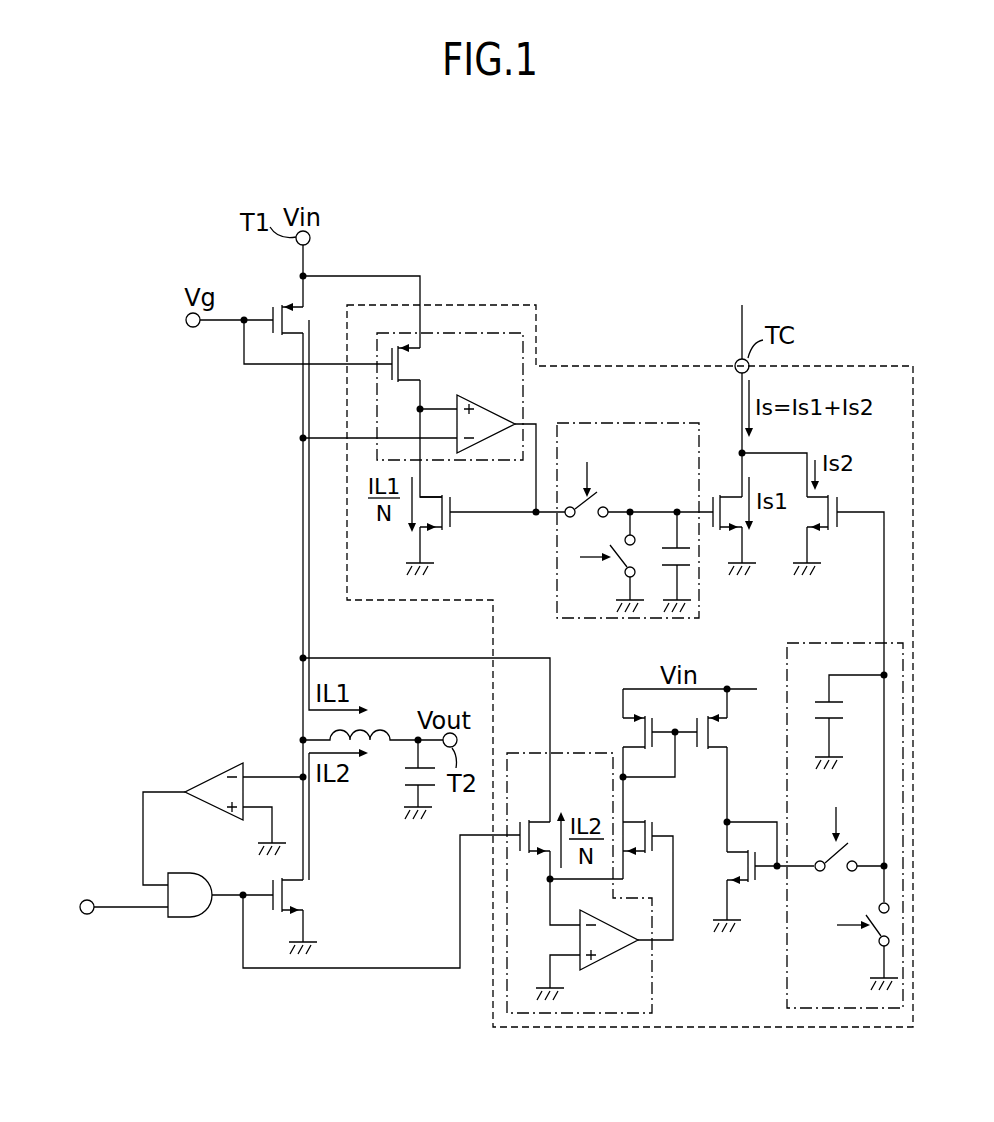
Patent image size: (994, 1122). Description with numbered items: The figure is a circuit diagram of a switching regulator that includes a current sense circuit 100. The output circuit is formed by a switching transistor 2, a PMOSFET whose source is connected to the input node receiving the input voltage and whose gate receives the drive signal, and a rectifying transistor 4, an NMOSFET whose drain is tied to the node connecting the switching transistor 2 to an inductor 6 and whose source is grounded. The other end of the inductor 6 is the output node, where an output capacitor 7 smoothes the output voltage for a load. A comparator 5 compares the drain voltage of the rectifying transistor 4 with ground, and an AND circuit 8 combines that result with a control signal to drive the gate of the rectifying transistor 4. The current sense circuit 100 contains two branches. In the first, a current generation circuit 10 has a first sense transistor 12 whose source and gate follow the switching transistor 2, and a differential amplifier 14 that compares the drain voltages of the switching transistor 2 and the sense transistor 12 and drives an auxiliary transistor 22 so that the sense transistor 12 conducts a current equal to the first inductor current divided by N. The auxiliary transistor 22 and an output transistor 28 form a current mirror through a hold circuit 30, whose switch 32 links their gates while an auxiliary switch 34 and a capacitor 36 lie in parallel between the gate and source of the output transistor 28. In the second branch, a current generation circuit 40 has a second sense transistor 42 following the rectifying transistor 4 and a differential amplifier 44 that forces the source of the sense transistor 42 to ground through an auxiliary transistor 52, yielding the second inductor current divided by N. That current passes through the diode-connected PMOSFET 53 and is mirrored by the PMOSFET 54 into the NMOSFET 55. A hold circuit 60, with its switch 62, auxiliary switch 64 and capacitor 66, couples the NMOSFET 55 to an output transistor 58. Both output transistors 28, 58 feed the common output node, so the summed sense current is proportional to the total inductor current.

The switching transistor 2 is at (296, 305).
The rectifying transistor 4 is at (300, 882).
The comparator 5 is at (215, 810).
The inductor 6 is at (388, 727).
The output capacitor 7 is at (405, 786).
The AND circuit 8 is at (185, 918).
The current generation circuit 10 is at (525, 388).
The first sense transistor 12 is at (405, 352).
The differential amplifier 14 is at (490, 440).
The auxiliary transistor 22 is at (425, 530).
The output transistor 28 is at (735, 497).
The hold circuit 30 is at (700, 598).
The switch 32 is at (600, 493).
The auxiliary switch 34 is at (615, 565).
The capacitor 36 is at (665, 580).
The current generation circuit 40 is at (655, 985).
The second sense transistor 42 is at (540, 820).
The differential amplifier 44 is at (612, 957).
The auxiliary transistor 52 is at (638, 822).
The PMOSFET 53 is at (628, 718).
The PMOSFET 54 is at (718, 722).
The NMOSFET 55 is at (742, 882).
The output transistor 58 is at (820, 530).
The hold circuit 60 is at (787, 982).
The switch 62 is at (835, 852).
The auxiliary switch 64 is at (870, 933).
The capacitor 66 is at (820, 700).
The current sense circuit 100 is at (636, 364).